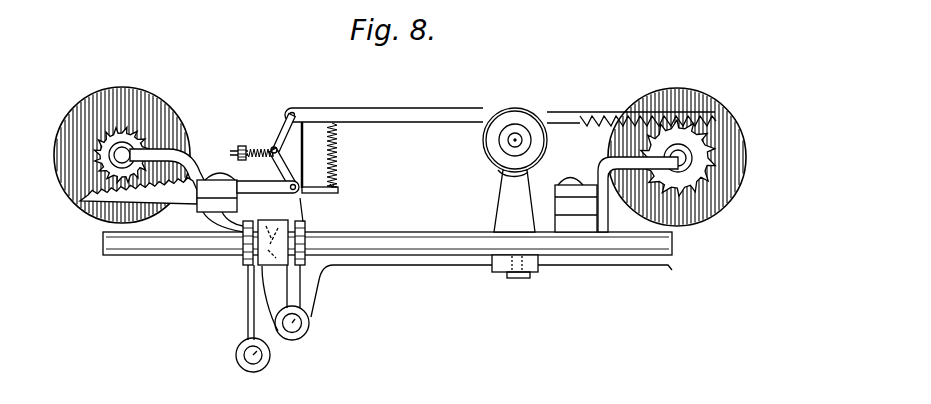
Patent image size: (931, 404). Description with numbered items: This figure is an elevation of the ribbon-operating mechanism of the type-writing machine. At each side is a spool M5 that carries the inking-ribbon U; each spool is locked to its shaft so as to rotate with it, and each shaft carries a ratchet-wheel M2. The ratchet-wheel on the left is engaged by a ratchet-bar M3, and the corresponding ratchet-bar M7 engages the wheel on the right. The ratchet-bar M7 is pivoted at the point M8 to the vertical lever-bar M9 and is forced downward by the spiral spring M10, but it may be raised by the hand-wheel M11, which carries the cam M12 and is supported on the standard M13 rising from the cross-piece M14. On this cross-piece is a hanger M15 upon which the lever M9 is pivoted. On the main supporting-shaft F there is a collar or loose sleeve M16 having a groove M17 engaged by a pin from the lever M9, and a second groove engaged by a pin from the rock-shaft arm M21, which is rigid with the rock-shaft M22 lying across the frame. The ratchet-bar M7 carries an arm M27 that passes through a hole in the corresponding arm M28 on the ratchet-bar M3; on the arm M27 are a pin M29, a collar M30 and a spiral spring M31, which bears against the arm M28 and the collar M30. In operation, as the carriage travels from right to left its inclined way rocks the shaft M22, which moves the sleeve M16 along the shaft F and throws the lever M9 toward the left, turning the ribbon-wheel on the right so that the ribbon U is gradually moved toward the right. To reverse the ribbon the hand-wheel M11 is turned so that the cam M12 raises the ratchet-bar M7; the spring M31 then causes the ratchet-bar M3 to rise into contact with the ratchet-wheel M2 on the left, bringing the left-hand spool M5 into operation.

The ratchet-wheel M2 is at (86, 197).
The ratchet-bar M3 is at (87, 200).
The spool M5 is at (157, 105).
The ratchet-bar M7 is at (570, 112).
The pivot point M8 is at (295, 107).
The vertical lever-bar M9 is at (289, 161).
The spiral spring M10 is at (338, 152).
The hand-wheel M11 is at (511, 118).
The cam M12 is at (492, 173).
The standard M13 is at (498, 192).
The cross-piece M14 is at (461, 262).
The hanger M15 is at (310, 297).
The collar or loose sleeve M16 is at (270, 221).
The groove M17 is at (296, 219).
The rock-shaft arm M21 is at (247, 305).
The rock-shaft M22 is at (270, 353).
The arm M27 is at (302, 135).
The arm M28 is at (336, 178).
The pin M29 is at (232, 153).
The collar M30 is at (242, 145).
The spiral spring M31 is at (271, 146).
The ribbon U is at (405, 232).
The main supporting-shaft F is at (447, 240).